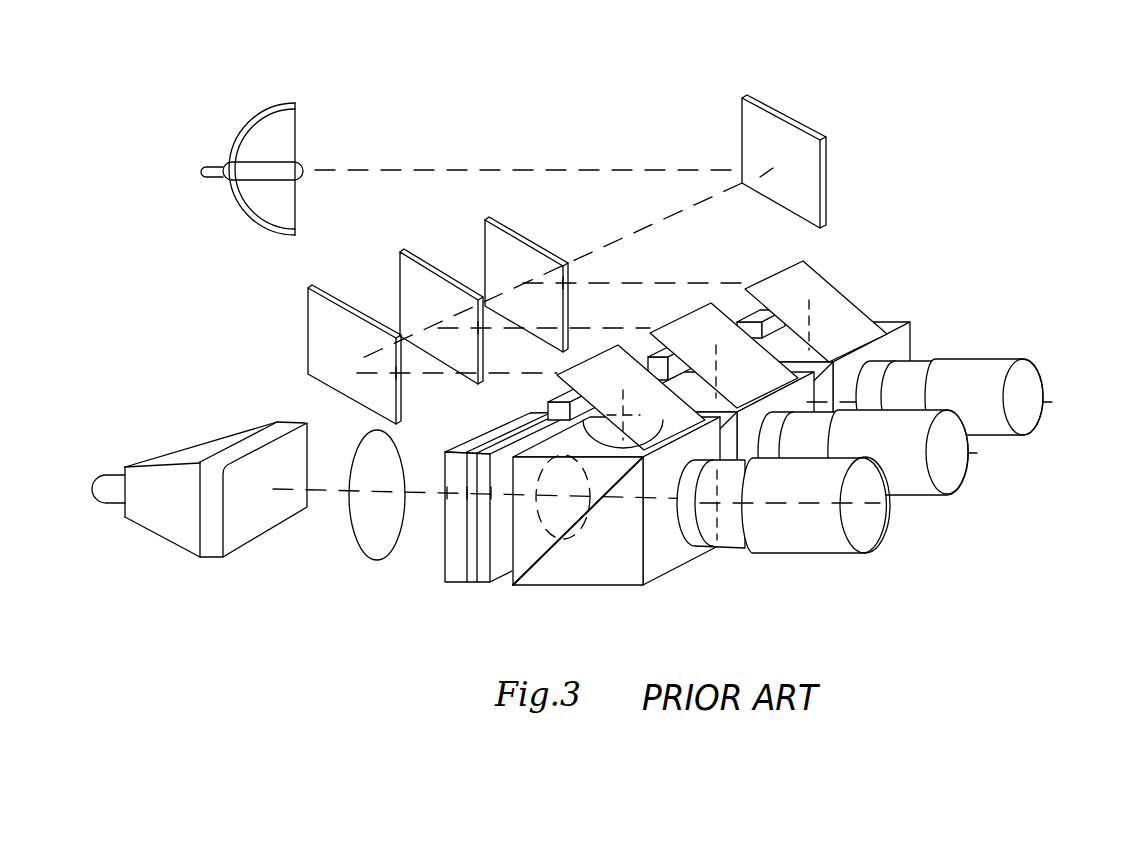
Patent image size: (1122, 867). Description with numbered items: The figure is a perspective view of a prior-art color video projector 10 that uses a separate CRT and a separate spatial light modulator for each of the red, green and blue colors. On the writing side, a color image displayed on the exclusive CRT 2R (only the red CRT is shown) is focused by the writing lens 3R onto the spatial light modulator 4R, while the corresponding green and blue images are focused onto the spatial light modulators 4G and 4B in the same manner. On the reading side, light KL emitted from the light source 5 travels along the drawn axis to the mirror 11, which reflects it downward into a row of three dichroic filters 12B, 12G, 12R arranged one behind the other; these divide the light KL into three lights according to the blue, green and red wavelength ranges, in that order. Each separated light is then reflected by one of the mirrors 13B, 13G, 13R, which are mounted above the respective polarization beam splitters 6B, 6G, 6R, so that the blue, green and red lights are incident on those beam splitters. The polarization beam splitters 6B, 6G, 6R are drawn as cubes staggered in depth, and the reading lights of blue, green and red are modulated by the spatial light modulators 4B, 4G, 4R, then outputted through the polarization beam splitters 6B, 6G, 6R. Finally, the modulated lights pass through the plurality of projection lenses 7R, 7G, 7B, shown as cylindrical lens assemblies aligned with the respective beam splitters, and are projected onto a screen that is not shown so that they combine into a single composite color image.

The color video projector 10 is at (143, 113).
The light source 5 is at (297, 133).
The light KL is at (460, 169).
The mirror 11 is at (826, 165).
The dichroic filter 12R is at (308, 296).
The dichroic filter 12G is at (398, 273).
The dichroic filter 12B is at (484, 233).
The mirror 13R is at (560, 374).
The mirror 13G is at (698, 305).
The mirror 13B is at (775, 276).
The spatial light modulator 4G is at (545, 404).
The spatial light modulator 4B is at (652, 355).
The spatial light modulator 4R is at (445, 570).
The polarization beam splitter 6R is at (662, 578).
The polarization beam splitter 6G is at (822, 352).
The polarization beam splitter 6B is at (908, 338).
The projection lens 7R is at (877, 548).
The projection lens 7G is at (955, 488).
The projection lens 7B is at (1036, 377).
The CRT 2R is at (197, 438).
The writing lens 3R is at (350, 537).